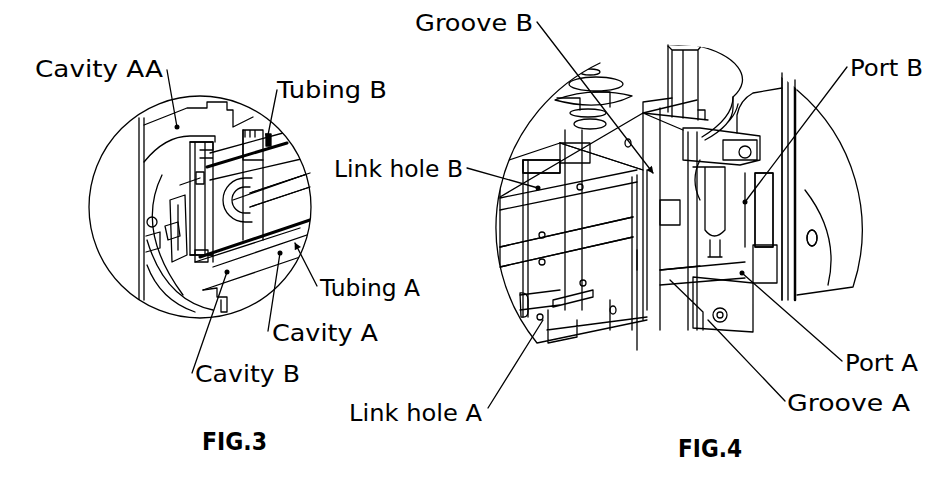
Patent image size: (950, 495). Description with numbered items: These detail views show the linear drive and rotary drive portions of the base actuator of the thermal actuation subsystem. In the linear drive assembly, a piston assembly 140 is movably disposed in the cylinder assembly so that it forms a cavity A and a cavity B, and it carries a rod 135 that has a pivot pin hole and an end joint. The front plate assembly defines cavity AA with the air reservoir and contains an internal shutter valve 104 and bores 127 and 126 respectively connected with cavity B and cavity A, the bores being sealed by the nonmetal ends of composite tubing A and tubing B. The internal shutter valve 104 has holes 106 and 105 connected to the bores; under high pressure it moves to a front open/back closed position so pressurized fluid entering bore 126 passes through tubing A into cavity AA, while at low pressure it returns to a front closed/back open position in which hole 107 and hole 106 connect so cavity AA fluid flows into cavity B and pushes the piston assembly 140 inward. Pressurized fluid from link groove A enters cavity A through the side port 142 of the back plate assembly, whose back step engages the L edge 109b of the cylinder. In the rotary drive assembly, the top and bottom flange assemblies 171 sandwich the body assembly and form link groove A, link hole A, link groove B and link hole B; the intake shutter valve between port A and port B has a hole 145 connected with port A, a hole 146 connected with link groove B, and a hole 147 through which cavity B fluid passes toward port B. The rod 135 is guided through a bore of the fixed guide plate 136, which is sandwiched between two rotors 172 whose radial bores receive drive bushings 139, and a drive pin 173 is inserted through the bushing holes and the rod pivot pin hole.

In FIG. 3, the internal shutter valve 104 is at (157, 240).
In FIG. 3, the hole 105 is at (200, 257).
In FIG. 3, the hole 106 is at (200, 178).
In FIG. 3, the hole 107 is at (170, 230).
In FIG. 4, the L edge 109b is at (543, 160).
In FIG. 3, the bore 126 is at (203, 256).
In FIG. 3, the bore 127 is at (200, 147).
In FIG. 3, the rod 135 is at (272, 201).
In FIG. 4, the rod 135 is at (527, 253).
In FIG. 4, the fixed guide plate 136 is at (675, 212).
In FIG. 4, the drive bushing 139 is at (677, 152).
In FIG. 3, the piston assembly 140 is at (253, 157).
In FIG. 4, the side port 142 is at (519, 304).
In FIG. 4, the hole 145 is at (786, 292).
In FIG. 4, the hole 146 is at (755, 207).
In FIG. 4, the hole 147 is at (808, 235).
In FIG. 4, the flange assembly 171 is at (658, 77).
In FIG. 4, the rotor 172 is at (618, 179).
In FIG. 4, the drive pin 173 is at (635, 225).